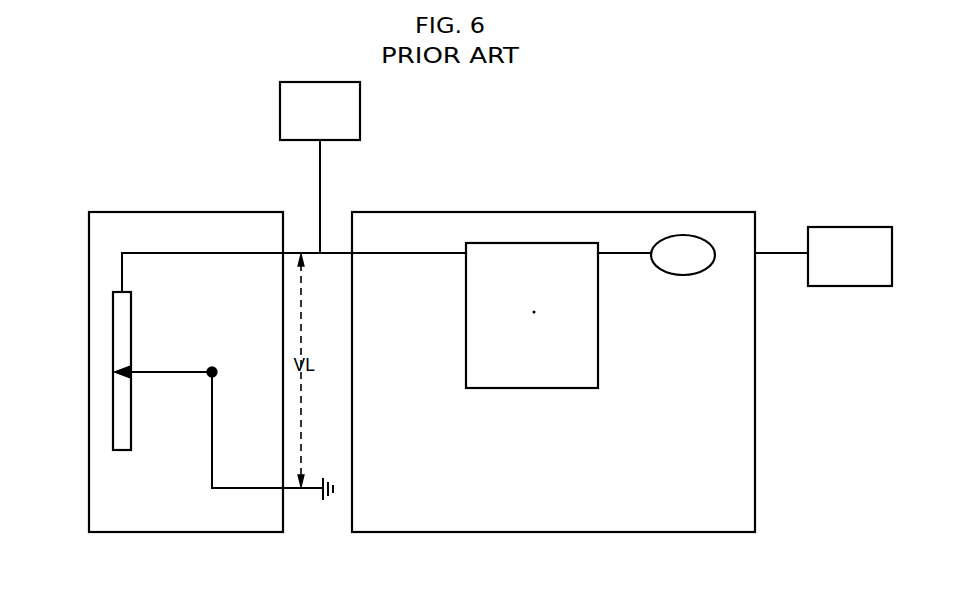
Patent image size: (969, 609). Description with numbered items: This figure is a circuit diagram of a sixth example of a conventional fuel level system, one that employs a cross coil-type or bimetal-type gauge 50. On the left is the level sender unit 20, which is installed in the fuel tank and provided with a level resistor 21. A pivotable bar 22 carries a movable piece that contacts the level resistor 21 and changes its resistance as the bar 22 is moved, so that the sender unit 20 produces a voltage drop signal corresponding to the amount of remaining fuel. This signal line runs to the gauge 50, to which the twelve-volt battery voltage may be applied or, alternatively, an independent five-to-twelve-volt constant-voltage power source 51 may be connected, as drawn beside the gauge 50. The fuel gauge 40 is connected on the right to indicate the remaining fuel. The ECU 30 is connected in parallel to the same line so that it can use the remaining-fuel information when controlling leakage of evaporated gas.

The level sender unit 20 is at (188, 210).
The level resistor 21 is at (117, 420).
The pivotable bar 22 is at (163, 376).
The ECU 30 is at (360, 118).
The fuel gauge 40 is at (850, 227).
The gauge 50 is at (532, 243).
The constant-voltage power source 51 is at (684, 235).